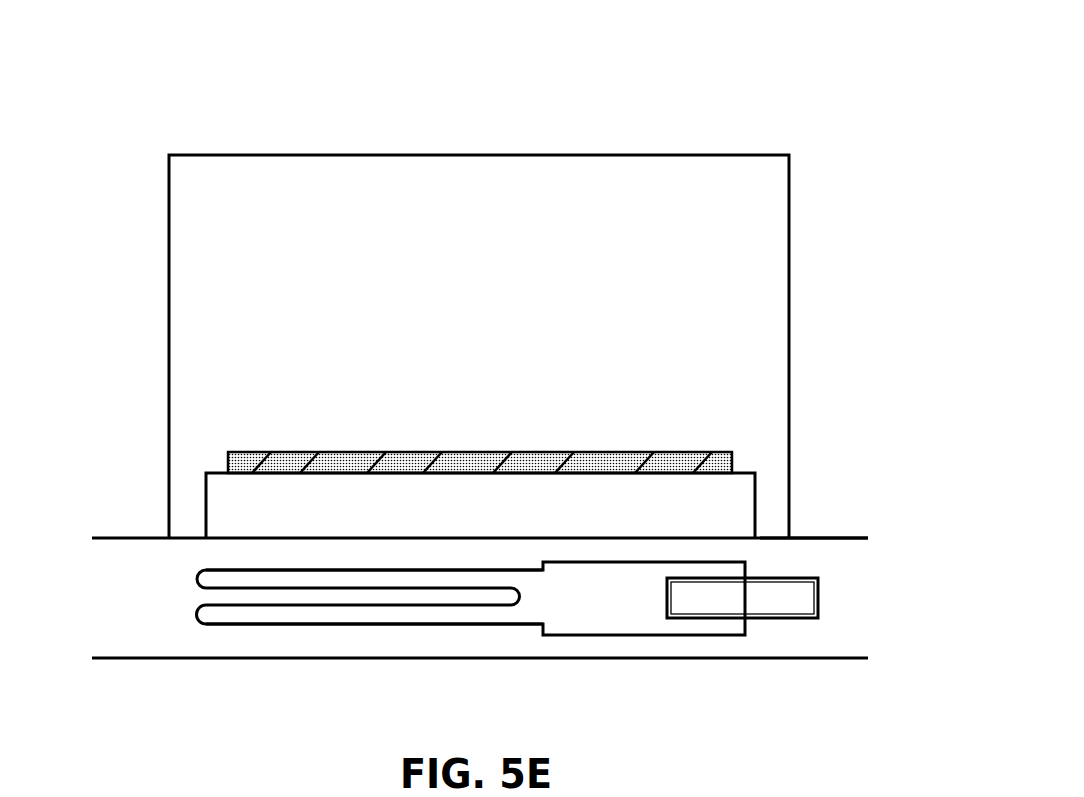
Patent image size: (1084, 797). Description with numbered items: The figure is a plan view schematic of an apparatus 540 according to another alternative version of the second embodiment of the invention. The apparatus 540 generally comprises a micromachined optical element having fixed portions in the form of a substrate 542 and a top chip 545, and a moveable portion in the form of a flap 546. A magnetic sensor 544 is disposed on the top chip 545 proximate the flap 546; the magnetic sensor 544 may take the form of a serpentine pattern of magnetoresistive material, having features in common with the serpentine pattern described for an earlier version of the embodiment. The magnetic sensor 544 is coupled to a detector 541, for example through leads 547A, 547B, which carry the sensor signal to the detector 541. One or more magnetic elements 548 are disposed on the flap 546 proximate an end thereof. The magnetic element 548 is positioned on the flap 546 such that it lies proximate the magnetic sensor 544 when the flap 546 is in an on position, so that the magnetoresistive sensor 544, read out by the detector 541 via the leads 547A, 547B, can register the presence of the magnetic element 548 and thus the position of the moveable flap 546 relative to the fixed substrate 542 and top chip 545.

The apparatus 540 is at (752, 70).
The detector 541 is at (801, 621).
The substrate 542 is at (132, 304).
The magnetic sensor 544 is at (198, 574).
The top chip 545 is at (839, 537).
The flap 546 is at (755, 498).
The lead 547A is at (572, 565).
The lead 547B is at (603, 633).
The magnetic element 548 is at (372, 452).